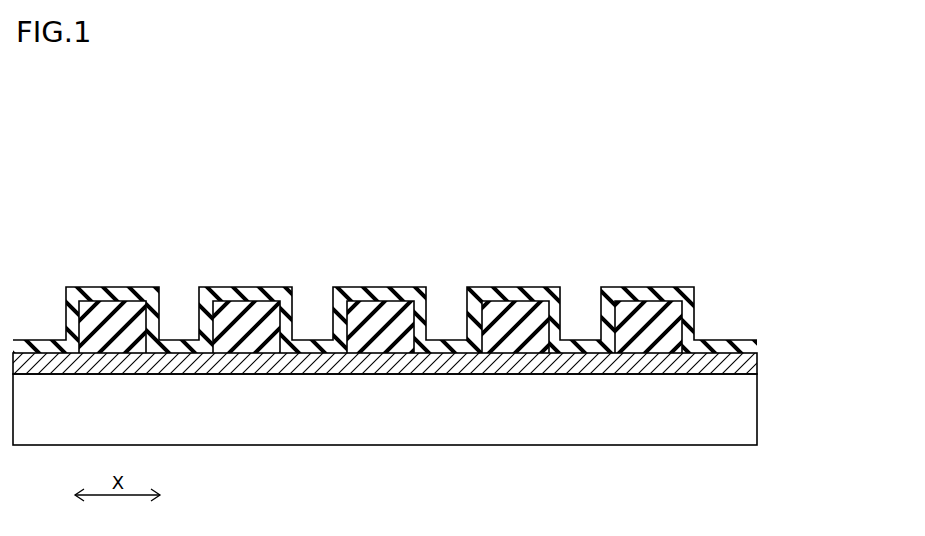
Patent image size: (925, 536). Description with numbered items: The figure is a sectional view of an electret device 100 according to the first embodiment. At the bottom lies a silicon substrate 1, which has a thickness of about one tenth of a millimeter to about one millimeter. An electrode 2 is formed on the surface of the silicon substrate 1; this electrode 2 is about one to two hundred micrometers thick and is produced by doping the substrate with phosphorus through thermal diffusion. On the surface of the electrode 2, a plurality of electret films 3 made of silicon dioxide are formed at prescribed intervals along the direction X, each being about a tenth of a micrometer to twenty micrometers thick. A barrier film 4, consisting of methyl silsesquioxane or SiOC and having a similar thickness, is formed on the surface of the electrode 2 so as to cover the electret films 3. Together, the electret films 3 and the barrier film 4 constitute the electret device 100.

The electret device 100 is at (398, 170).
The silicon substrate 1 is at (716, 421).
The electrode 2 is at (717, 364).
The electret film 3 is at (108, 328).
The barrier film 4 is at (714, 346).